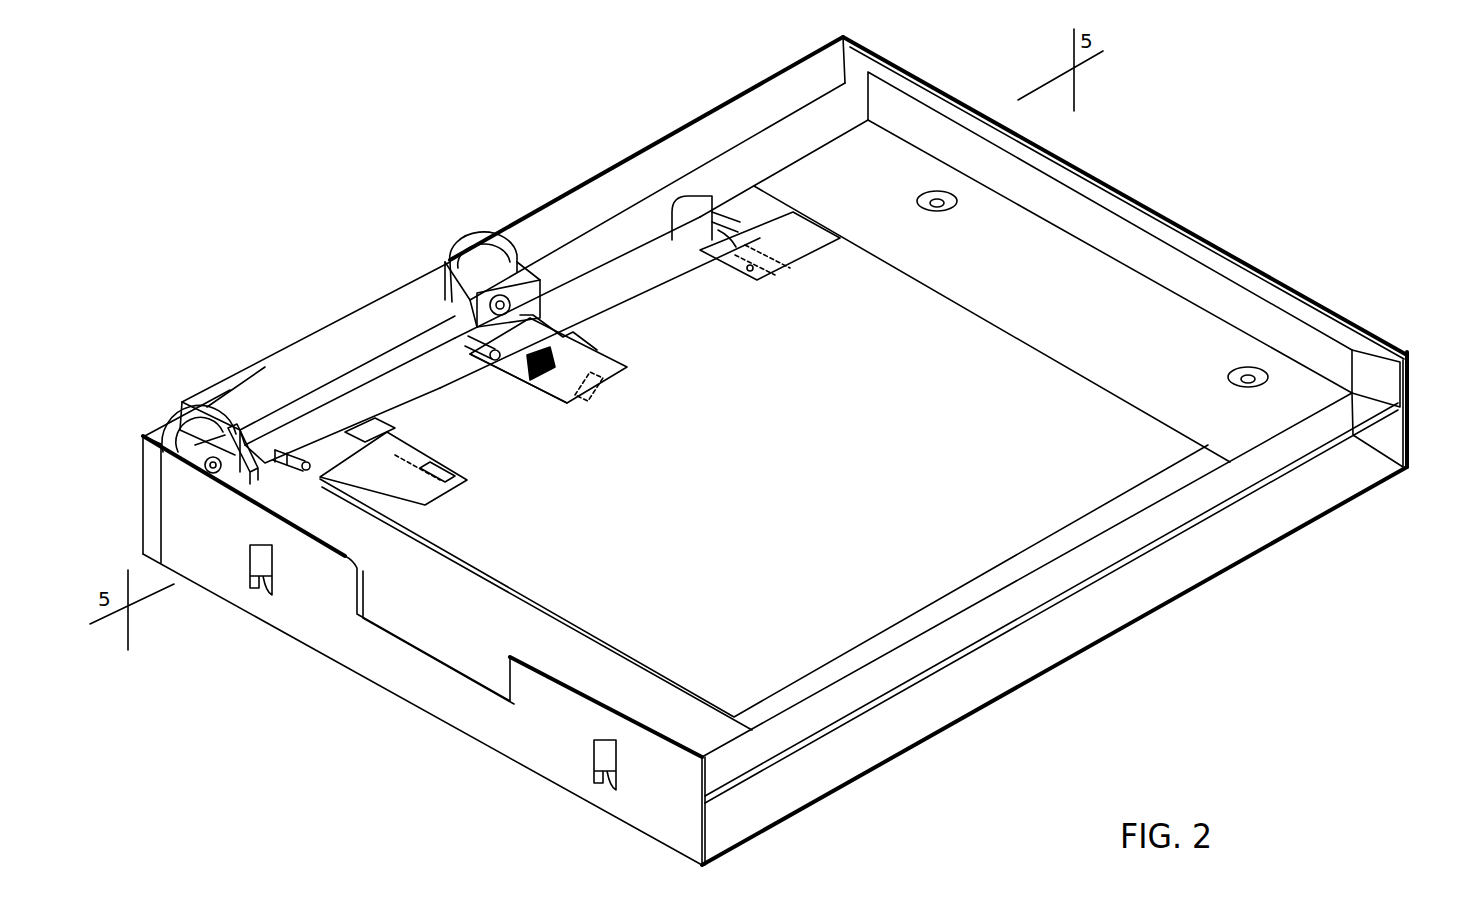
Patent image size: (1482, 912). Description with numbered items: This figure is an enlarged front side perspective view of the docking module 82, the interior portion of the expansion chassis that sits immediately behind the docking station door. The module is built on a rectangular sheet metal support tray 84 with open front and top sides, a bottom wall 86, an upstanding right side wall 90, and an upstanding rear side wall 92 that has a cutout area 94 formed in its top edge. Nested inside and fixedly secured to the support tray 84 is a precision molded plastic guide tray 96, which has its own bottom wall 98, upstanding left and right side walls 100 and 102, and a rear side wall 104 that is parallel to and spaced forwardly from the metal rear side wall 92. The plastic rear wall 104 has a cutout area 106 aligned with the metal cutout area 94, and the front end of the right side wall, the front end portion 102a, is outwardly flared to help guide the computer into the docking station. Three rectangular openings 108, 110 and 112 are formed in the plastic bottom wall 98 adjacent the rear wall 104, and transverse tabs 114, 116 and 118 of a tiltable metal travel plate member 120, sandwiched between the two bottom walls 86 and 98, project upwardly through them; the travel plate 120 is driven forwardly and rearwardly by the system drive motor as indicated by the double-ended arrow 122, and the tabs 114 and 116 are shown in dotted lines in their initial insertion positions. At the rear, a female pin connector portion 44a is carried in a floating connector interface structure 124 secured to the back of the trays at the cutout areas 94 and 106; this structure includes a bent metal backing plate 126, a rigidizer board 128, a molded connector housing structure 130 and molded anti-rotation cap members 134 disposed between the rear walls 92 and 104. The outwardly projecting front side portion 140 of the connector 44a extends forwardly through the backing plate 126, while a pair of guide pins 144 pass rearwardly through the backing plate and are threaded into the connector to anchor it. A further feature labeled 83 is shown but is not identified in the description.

The docking module 82 is at (1238, 198).
The front side wall 83 is at (480, 703).
The sheet metal support tray 84 is at (1232, 570).
The bottom wall 86 is at (1290, 522).
The right side wall 90 is at (1072, 172).
The rear side wall 92 is at (640, 163).
The cutout area 94 is at (443, 264).
The guide tray 96 is at (1113, 572).
The bottom wall 98 is at (892, 486).
The left side wall 100 is at (434, 645).
The right side wall 102 is at (1140, 257).
The front end portion 102a is at (1410, 385).
The rear side wall 104 is at (805, 140).
The cutout area 106 is at (514, 302).
The rectangular opening 108 is at (408, 478).
The rectangular opening 110 is at (545, 382).
The rectangular opening 112 is at (748, 266).
The transverse tab 114 is at (393, 432).
The transverse tab 116 is at (547, 348).
The transverse tab 118 is at (793, 213).
The travel plate member 120 is at (600, 366).
The double-ended arrow 122 is at (790, 247).
The floating connector interface structure 124 is at (233, 343).
The backing plate 126 is at (353, 377).
The rigidizer board 128 is at (213, 390).
The connector housing structure 130 is at (242, 480).
The anti-rotation cap members 134 is at (478, 258).
The front side portion 140 is at (315, 427).
The guide pins 144 is at (480, 348).
The female pin connector portion 44a is at (437, 393).